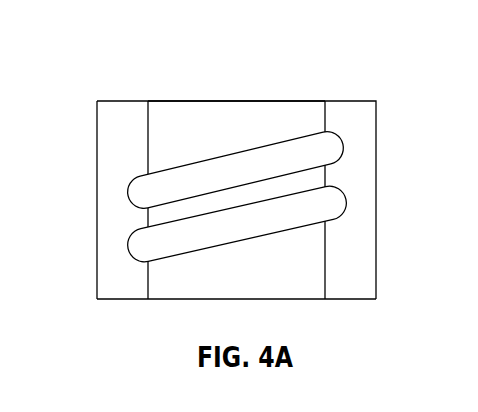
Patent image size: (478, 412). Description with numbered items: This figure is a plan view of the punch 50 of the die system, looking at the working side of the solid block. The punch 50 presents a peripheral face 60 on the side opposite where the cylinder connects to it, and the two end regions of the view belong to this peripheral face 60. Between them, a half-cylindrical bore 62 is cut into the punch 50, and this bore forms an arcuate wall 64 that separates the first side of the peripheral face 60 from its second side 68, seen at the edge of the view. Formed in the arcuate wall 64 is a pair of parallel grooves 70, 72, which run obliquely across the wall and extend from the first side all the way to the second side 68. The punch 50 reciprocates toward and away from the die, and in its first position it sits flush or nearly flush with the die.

The punch 50 is at (343, 115).
The peripheral face 60 is at (123, 112).
The half-cylindrical bore 62 is at (237, 108).
The arcuate wall 64 is at (303, 277).
The second side 68 is at (117, 269).
The groove 70 is at (332, 150).
The groove 72 is at (327, 203).